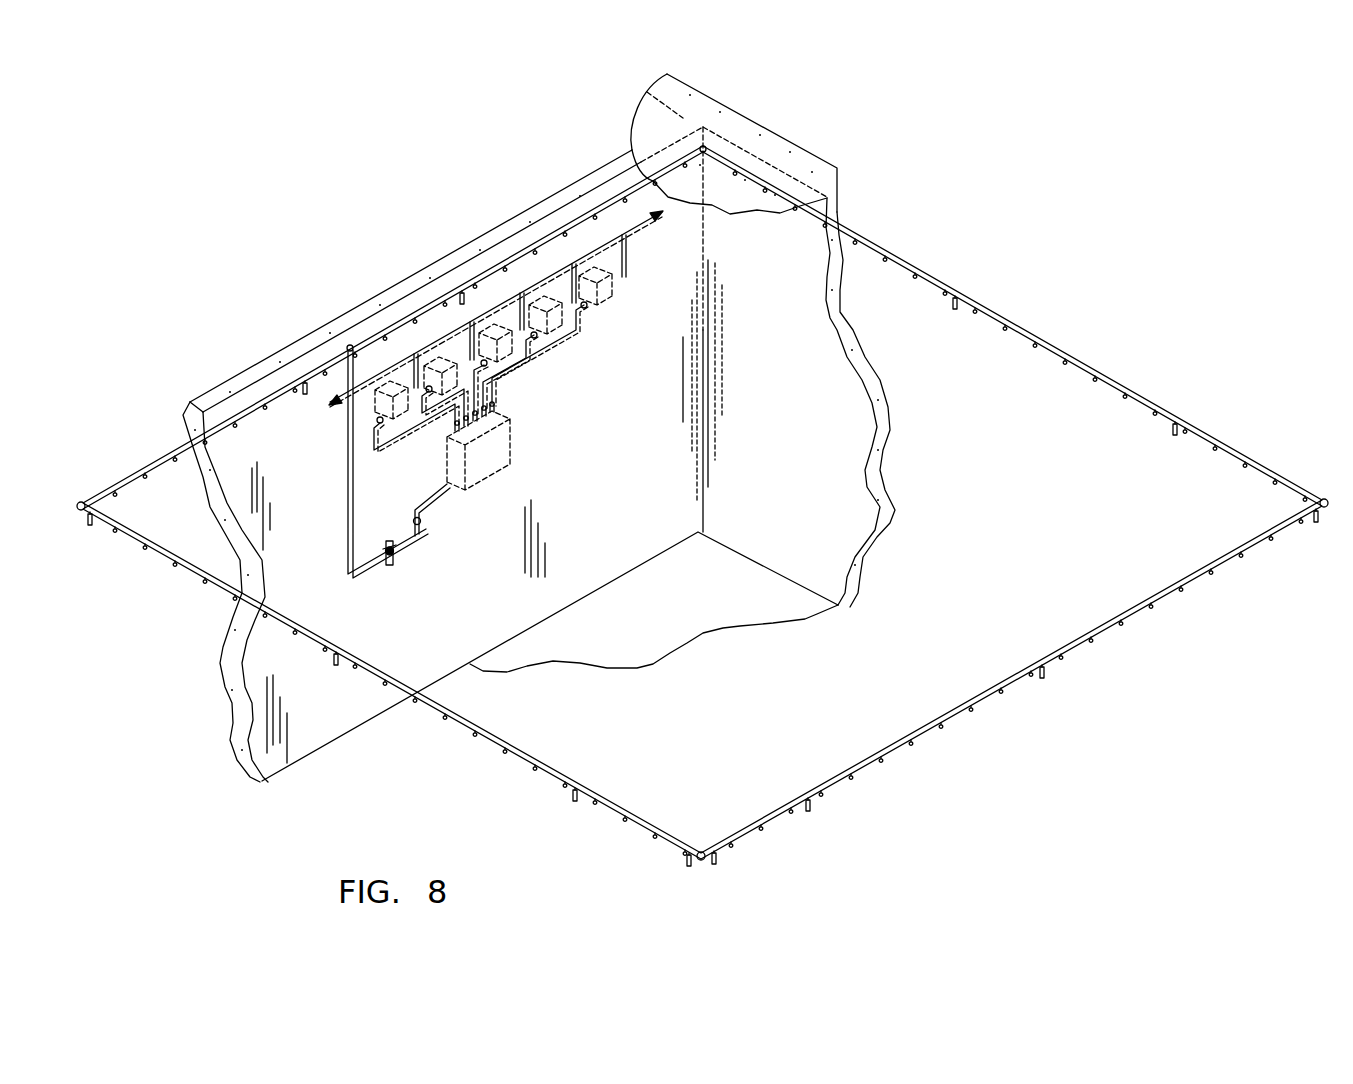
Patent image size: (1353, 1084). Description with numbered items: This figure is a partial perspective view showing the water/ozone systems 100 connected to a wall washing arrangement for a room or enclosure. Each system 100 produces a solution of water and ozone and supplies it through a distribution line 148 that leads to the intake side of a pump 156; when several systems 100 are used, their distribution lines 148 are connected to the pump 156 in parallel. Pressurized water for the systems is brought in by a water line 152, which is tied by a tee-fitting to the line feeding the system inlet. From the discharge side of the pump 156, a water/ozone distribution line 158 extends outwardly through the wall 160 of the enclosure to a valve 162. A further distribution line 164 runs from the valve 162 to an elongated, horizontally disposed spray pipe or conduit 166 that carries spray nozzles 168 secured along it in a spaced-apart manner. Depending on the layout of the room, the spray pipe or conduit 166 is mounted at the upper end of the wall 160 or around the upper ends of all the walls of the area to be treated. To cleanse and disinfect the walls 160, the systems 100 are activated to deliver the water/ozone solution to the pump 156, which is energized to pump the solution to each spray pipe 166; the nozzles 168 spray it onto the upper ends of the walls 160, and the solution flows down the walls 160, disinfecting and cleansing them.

The system 100 is at (389, 382).
The distribution line 148 is at (402, 445).
The water line 152 is at (640, 228).
The pump 156 is at (505, 432).
The water/ozone distribution line 158 is at (432, 503).
The wall 160 is at (682, 238).
The valve 162 is at (395, 552).
The distribution line 164 is at (347, 478).
The spray pipe or conduit 166 is at (244, 400).
The spray nozzles 168 is at (152, 464).